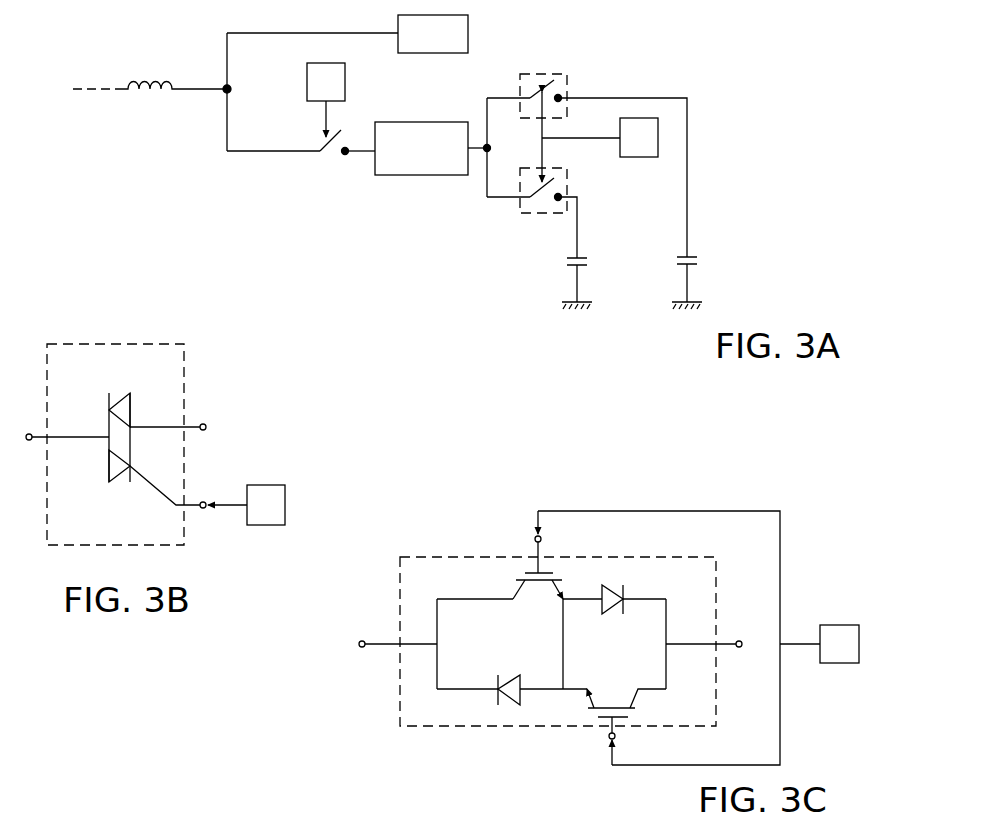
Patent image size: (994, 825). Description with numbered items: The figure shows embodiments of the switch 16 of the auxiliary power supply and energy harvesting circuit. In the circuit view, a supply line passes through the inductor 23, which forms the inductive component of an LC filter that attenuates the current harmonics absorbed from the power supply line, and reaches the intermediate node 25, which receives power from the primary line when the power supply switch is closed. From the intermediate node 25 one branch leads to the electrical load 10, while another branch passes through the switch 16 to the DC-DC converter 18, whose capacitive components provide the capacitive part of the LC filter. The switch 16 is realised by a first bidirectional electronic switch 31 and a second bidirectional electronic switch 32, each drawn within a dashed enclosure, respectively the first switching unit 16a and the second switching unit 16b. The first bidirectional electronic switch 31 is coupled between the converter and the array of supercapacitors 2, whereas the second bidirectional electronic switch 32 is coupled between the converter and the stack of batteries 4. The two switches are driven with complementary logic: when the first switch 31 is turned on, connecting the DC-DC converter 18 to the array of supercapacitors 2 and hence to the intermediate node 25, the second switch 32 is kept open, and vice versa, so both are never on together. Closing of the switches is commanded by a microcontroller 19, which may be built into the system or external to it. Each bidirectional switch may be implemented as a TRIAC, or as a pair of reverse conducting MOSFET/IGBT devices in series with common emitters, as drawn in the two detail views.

In FIG. 3A, the array of supercapacitors 2 is at (697, 253).
In FIG. 3A, the stack of batteries 4 is at (585, 255).
In FIG. 3A, the electrical load 10 is at (460, 27).
In FIG. 3A, the switch 16 is at (330, 153).
In FIG. 3A, the first switching unit 16a is at (546, 82).
In FIG. 3B, the first switching unit 16a is at (153, 418).
In FIG. 3C, the first switching unit 16a is at (550, 641).
In FIG. 3A, the second switching unit 16b is at (524, 223).
In FIG. 3B, the second switching unit 16b is at (90, 340).
In FIG. 3C, the second switching unit 16b is at (425, 728).
In FIG. 3A, the DC-DC converter 18 is at (402, 177).
In FIG. 3B, the microcontroller 19 is at (268, 527).
In FIG. 3C, the microcontroller 19 is at (838, 665).
In FIG. 3A, the inductor 23 is at (146, 72).
In FIG. 3A, the intermediate node 25 is at (232, 85).
In FIG. 3A, the first bidirectional electronic switch 31 is at (527, 88).
In FIG. 3B, the first bidirectional electronic switch 31 is at (153, 427).
In FIG. 3C, the first bidirectional electronic switch 31 is at (550, 627).
In FIG. 3A, the second bidirectional electronic switch 32 is at (533, 206).
In FIG. 3B, the second bidirectional electronic switch 32 is at (190, 385).
In FIG. 3C, the second bidirectional electronic switch 32 is at (428, 556).